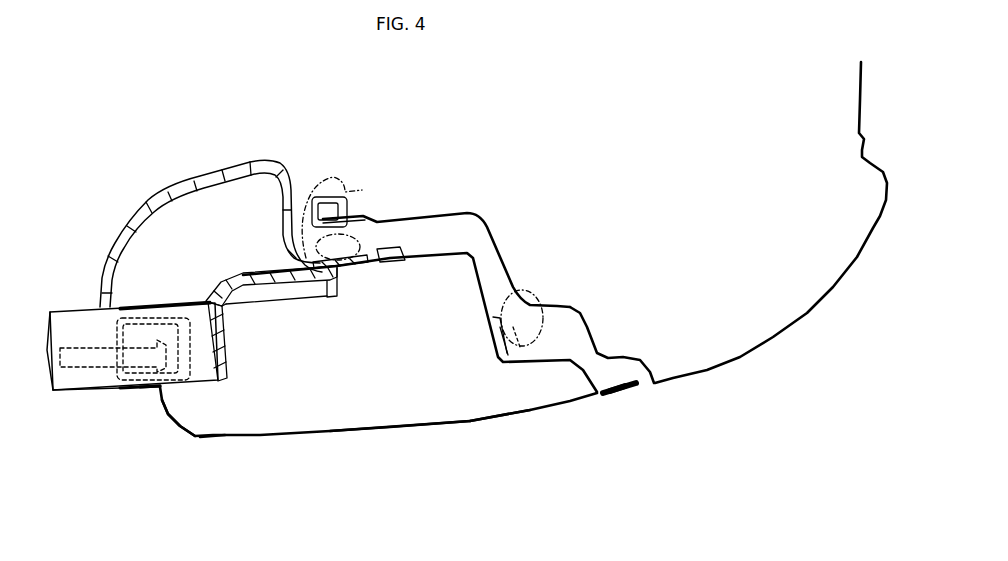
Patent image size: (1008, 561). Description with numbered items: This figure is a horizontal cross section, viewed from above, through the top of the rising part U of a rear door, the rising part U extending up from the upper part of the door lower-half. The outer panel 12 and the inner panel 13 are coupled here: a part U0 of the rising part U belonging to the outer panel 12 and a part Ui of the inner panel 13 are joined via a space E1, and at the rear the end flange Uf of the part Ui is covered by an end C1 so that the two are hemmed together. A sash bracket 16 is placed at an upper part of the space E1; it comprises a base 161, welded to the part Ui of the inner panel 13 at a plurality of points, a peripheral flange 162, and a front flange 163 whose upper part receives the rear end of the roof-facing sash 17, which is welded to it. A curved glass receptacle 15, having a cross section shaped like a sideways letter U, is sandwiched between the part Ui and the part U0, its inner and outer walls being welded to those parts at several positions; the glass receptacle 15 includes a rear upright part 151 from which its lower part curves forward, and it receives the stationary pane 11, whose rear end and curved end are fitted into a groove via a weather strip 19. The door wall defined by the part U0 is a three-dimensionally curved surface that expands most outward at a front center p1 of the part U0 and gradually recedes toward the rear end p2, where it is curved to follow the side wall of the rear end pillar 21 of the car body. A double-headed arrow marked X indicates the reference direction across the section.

The stationary pane 11 is at (68, 320).
The outer panel 12 is at (306, 441).
The inner panel 13 is at (210, 278).
The glass receptacle 15 is at (122, 313).
The rear upright part 151 is at (147, 400).
The sash bracket 16 is at (283, 308).
The base 161 is at (313, 298).
The peripheral flange 162 is at (340, 284).
The front flange 163 is at (228, 350).
The roof-facing sash 17 is at (70, 385).
The weather strip 19 is at (160, 302).
The rear end pillar 21 is at (797, 328).
The end C1 is at (637, 389).
The space E1 is at (225, 410).
The end flange Uf is at (597, 386).
The part of the inner panel Ui is at (438, 253).
The part of the rising part U0 is at (387, 429).
The rising part U is at (497, 428).
The front center p1 is at (213, 437).
The rear end p2 is at (617, 397).
The vehicle width direction X is at (487, 103).